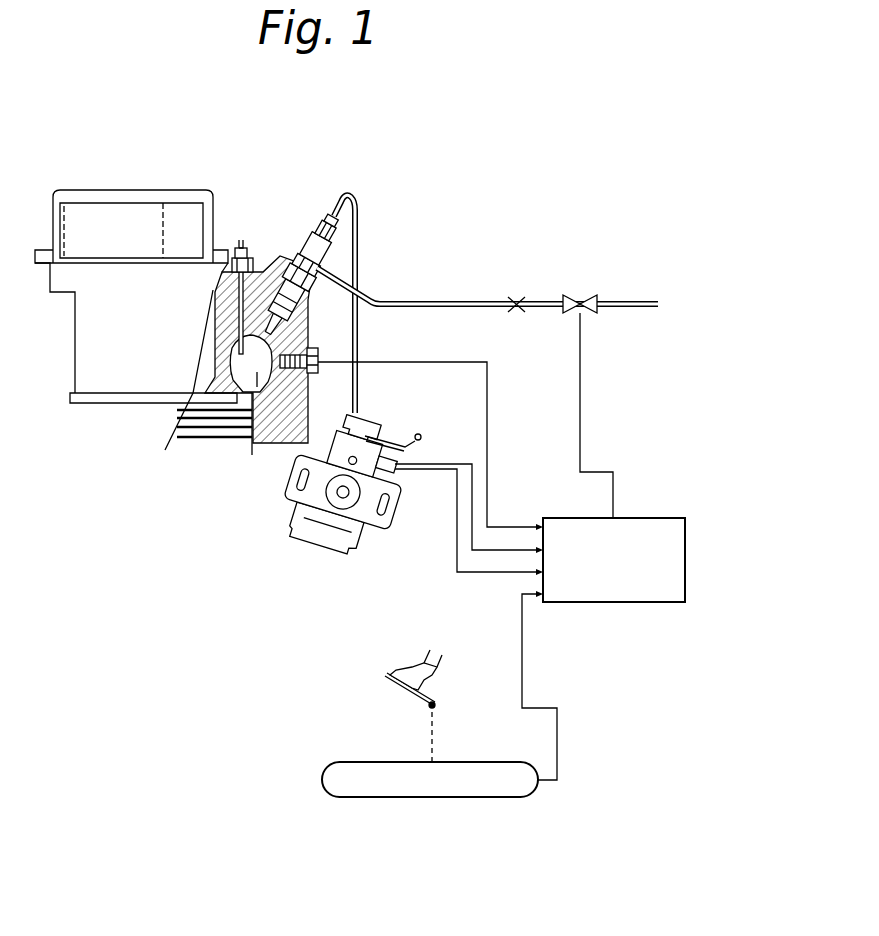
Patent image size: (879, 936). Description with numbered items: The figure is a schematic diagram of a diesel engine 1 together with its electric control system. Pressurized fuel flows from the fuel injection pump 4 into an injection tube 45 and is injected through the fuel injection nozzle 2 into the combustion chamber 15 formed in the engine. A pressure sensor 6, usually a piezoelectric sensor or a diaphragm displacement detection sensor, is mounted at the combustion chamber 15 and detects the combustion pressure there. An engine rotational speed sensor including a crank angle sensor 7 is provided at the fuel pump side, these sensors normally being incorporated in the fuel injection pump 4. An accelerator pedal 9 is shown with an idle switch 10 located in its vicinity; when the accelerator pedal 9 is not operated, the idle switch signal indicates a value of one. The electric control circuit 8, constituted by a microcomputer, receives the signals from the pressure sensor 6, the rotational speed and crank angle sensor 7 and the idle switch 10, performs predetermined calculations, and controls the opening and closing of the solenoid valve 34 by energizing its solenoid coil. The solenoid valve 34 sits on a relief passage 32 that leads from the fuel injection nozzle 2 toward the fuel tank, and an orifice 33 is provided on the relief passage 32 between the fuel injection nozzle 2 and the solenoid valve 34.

The diesel engine 1 is at (132, 198).
The fuel injection nozzle 2 is at (303, 238).
The fuel injection pump 4 is at (367, 506).
The pressure sensor 6 is at (316, 346).
The engine rotational speed sensor including a crank angle sensor 7 is at (393, 468).
The electric control circuit 8 is at (611, 603).
The accelerator pedal 9 is at (415, 710).
The idle switch 10 is at (322, 780).
The combustion chamber 15 is at (273, 443).
The relief passage 32 is at (433, 299).
The orifice 33 is at (516, 316).
The solenoid valve 34 is at (597, 316).
The injection tube 45 is at (348, 192).